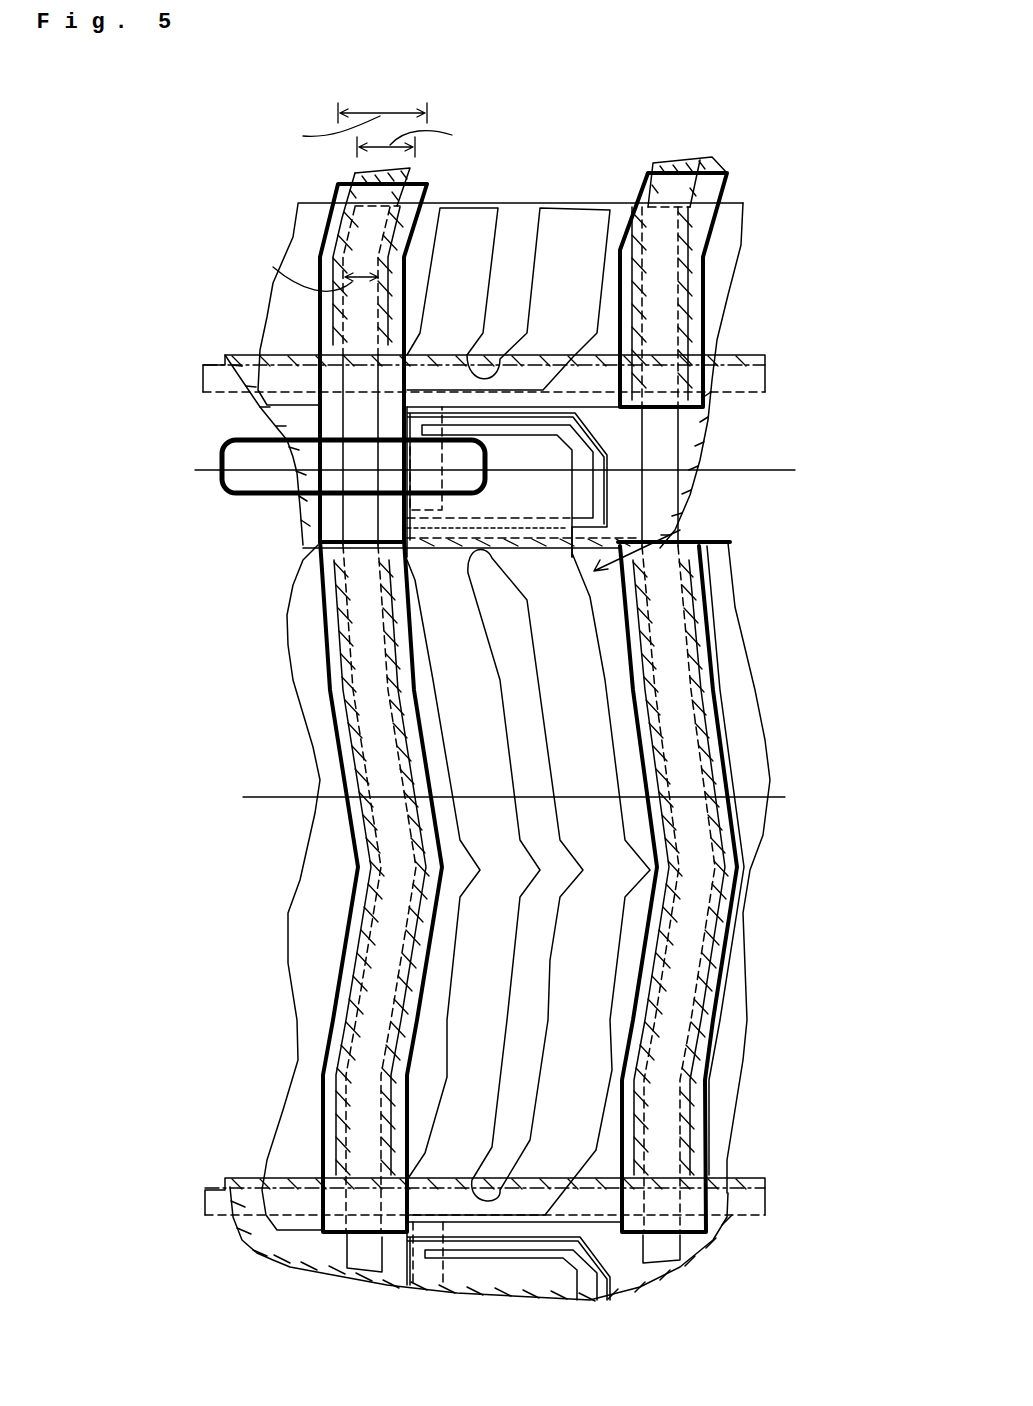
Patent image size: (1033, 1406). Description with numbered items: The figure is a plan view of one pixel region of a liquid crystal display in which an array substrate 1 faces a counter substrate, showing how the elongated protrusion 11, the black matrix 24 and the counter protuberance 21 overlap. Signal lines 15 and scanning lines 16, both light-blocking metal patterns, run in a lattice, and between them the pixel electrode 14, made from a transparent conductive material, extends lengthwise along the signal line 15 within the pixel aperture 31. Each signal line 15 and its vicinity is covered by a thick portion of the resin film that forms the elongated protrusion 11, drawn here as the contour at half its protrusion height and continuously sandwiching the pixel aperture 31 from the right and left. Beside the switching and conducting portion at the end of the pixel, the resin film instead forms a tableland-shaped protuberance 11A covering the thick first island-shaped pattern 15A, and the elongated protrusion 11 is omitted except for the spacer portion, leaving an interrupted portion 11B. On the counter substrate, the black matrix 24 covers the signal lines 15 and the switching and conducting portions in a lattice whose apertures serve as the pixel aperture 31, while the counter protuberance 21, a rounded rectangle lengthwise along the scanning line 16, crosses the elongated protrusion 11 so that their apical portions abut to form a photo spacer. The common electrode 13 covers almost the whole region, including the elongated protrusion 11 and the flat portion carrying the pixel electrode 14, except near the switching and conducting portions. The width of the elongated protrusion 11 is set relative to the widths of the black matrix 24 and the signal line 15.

The array substrate 1 is at (209, 109).
The elongated protrusion 11 is at (336, 193).
The tableland-shaped protuberance 11A is at (680, 435).
The interrupted portion 11B is at (672, 480).
The common electrode 13 is at (285, 308).
The pixel electrode 14 is at (553, 213).
The signal line 15 is at (695, 543).
The first island-shaped pattern 15A is at (600, 450).
The scanning line 16 is at (203, 385).
The counter protuberance 21 is at (268, 478).
The black matrix 24 is at (410, 176).
The pixel aperture 31 is at (659, 534).